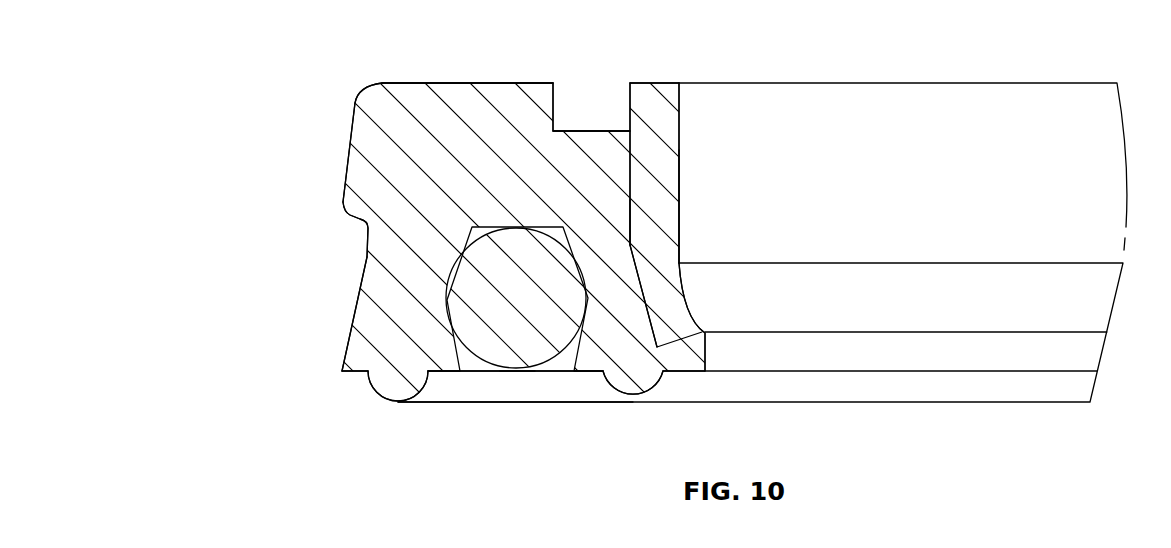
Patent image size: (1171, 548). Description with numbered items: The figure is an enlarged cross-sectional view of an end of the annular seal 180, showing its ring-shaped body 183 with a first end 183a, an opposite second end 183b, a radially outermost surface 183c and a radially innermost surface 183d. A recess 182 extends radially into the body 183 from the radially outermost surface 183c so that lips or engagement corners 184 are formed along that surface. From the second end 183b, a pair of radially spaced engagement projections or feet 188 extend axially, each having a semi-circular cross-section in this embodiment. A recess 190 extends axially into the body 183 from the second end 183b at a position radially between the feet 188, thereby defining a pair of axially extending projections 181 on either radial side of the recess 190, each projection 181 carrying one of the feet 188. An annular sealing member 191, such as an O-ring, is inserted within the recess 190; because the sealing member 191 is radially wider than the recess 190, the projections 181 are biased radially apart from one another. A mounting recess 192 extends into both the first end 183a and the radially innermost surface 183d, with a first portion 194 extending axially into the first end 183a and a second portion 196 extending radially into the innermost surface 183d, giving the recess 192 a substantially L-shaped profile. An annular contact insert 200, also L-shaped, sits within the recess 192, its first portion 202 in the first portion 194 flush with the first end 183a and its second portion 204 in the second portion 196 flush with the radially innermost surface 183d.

The annular seal 180 is at (827, 63).
The axially extending projection 181 is at (627, 298).
The recess 182 is at (345, 253).
The ring-shaped body 183 is at (355, 84).
The first end 183a is at (497, 74).
The second end 183b is at (486, 414).
The radially outermost surface 183c is at (334, 168).
The radially innermost surface 183d is at (721, 355).
The engagement corner 184 is at (343, 203).
The feet 188 is at (392, 402).
The recess 190 is at (560, 381).
The annular sealing member 191 is at (517, 335).
The mounting recess 192 is at (644, 152).
The first portion 194 is at (580, 130).
The second portion 196 is at (630, 241).
The annular contact insert 200 is at (692, 74).
The first portion 202 is at (637, 83).
The second portion 204 is at (679, 197).